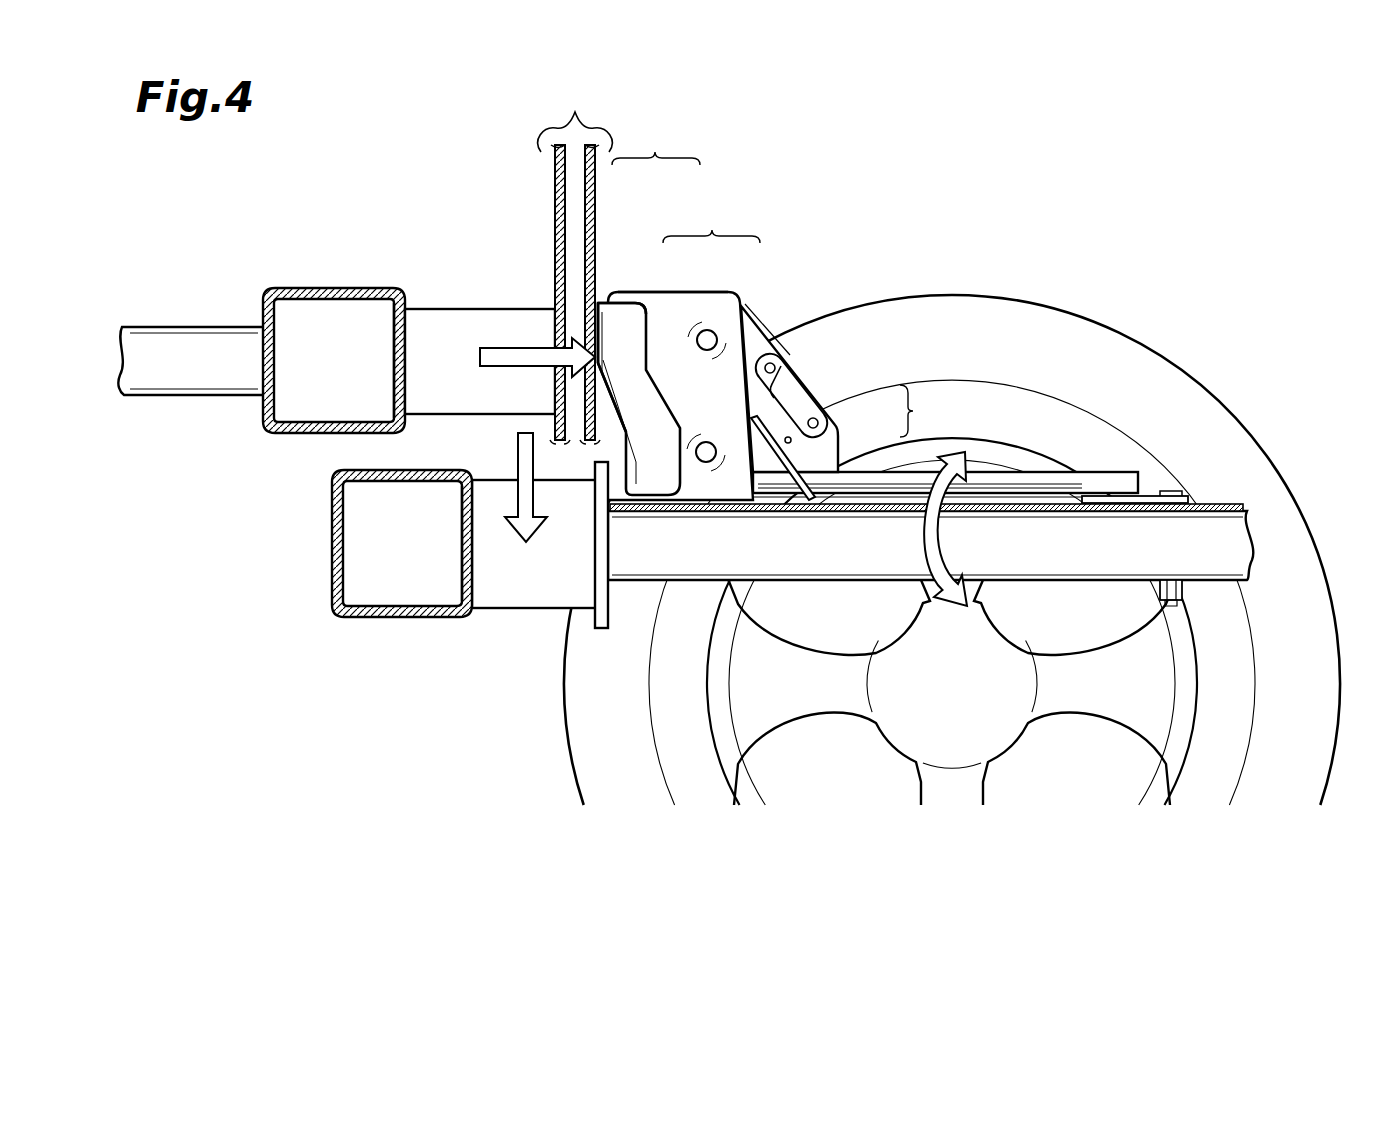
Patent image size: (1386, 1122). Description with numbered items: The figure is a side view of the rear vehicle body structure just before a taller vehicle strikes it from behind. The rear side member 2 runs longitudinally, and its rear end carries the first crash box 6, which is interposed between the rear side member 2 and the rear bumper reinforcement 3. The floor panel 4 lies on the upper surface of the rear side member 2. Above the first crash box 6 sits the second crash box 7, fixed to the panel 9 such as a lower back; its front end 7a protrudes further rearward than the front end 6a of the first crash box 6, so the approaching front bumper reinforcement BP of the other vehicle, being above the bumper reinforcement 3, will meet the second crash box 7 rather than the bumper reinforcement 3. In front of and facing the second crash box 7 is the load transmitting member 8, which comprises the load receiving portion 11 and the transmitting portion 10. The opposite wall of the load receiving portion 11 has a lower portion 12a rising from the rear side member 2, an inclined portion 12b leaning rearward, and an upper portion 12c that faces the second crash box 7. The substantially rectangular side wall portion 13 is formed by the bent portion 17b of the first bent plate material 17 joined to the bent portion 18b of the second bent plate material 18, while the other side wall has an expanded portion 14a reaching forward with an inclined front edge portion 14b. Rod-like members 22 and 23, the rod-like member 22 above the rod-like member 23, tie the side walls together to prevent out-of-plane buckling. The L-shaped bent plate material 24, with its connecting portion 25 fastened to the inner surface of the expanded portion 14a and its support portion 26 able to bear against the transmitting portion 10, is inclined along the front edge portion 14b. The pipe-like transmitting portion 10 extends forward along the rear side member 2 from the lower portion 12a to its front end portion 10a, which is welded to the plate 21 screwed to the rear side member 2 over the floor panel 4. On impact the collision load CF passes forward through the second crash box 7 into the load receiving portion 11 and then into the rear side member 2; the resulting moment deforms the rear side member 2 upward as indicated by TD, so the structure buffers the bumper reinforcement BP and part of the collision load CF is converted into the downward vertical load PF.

The rear side member 2 is at (1062, 547).
The bumper reinforcement 3 is at (360, 622).
The floor panel 4 is at (1217, 498).
The first crash box 6 is at (528, 585).
The front end of first crash box 6a is at (473, 513).
The second crash box 7 is at (436, 338).
The front end of second crash box 7a is at (402, 337).
The load transmitting member 8 is at (885, 200).
The panel 9 is at (575, 263).
The transmitting portion 10 is at (1000, 474).
The front end portion of transmitting portion 10a is at (1160, 488).
The load receiving portion 11 is at (656, 142).
The lower portion 12a is at (628, 484).
The inclined portion 12b is at (612, 413).
The upper portion 12c is at (595, 316).
The side wall portion 13 is at (711, 219).
The expanded portion 14a is at (792, 392).
The front edge portion 14b is at (788, 393).
The first bent plate material 17 is at (646, 288).
The bent portion 17b is at (702, 304).
The second bent plate material 18 is at (619, 325).
The bent portion 18b is at (641, 317).
The plate 21 is at (1190, 494).
The rod-like member 22 is at (710, 340).
The rod-like member 23 is at (708, 452).
The bent plate material 24 is at (927, 411).
The connecting portion 25 is at (790, 436).
The support portion 26 is at (800, 464).
The bumper reinforcement of another vehicle BP is at (291, 285).
The collision load CF is at (523, 347).
The vertical load PF is at (518, 445).
The deformation direction TD is at (926, 535).